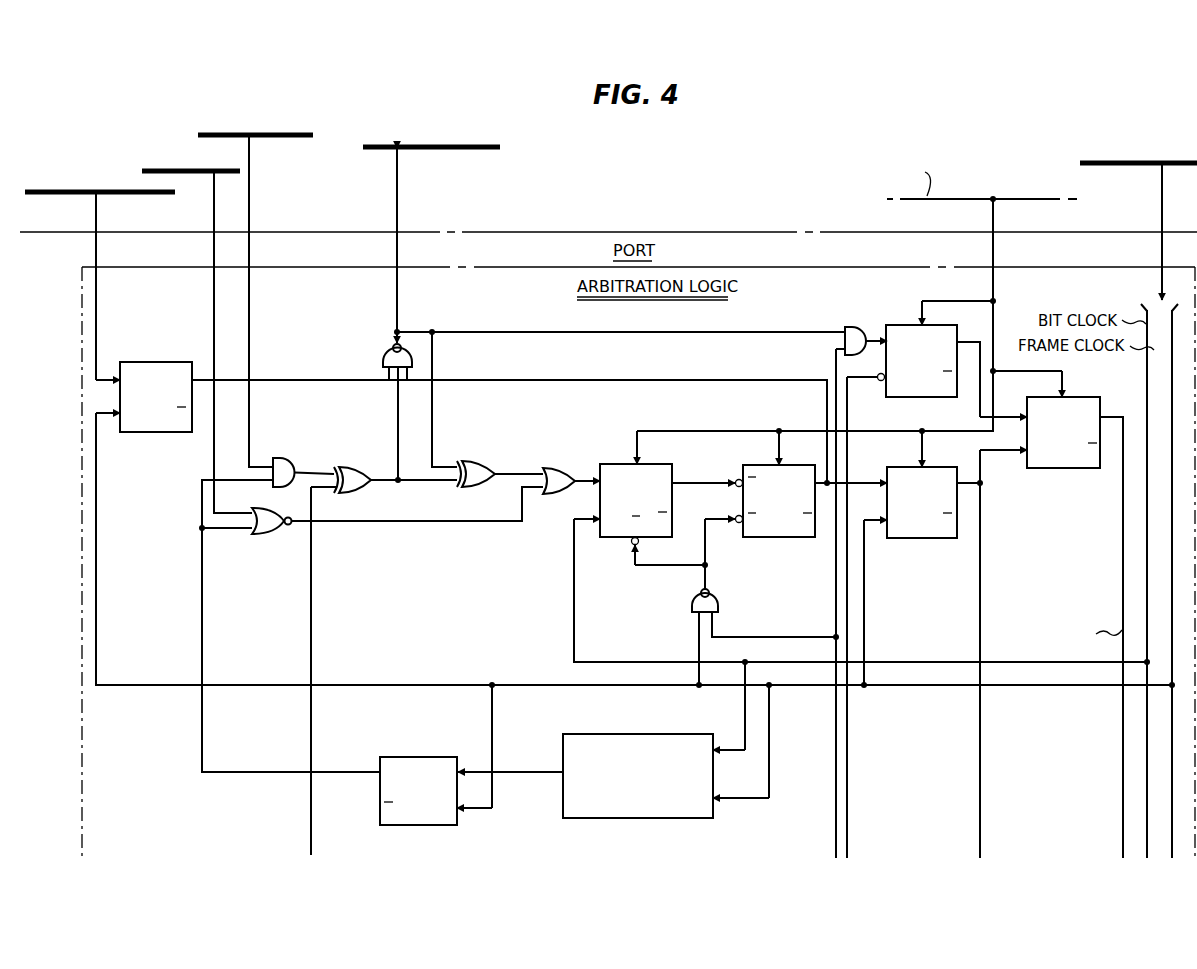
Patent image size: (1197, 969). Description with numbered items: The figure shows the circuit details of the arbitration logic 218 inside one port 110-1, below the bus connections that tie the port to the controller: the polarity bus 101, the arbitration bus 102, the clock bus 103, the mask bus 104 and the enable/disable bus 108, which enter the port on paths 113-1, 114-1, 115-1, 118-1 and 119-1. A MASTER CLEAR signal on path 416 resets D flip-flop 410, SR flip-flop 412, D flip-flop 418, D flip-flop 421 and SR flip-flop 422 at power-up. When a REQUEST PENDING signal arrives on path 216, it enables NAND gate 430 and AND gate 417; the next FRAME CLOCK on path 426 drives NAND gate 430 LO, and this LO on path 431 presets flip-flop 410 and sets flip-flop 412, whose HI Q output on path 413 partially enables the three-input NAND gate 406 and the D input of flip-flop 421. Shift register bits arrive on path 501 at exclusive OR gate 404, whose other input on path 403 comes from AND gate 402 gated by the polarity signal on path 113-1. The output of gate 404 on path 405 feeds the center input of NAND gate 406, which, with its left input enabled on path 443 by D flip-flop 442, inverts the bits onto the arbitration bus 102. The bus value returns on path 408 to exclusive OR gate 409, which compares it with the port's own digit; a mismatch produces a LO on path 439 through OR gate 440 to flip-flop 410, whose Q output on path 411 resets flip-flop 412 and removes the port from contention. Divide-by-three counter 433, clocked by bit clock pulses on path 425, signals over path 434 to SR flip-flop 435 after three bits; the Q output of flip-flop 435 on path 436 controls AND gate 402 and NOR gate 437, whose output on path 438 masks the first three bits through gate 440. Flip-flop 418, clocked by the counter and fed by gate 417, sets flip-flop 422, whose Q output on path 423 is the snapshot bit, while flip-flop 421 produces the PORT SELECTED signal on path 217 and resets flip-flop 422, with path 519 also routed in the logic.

The polarity conductor 101 is at (242, 132).
The arbitration bus 102 is at (432, 128).
The clock bus 103 is at (1108, 160).
The mask bus 104 is at (175, 168).
The enable/disable bus 108 is at (102, 190).
The port 110-1 is at (602, 230).
The path 113-1 is at (251, 212).
The path 114-1 is at (398, 204).
The clock bus line 115-1 is at (1160, 217).
The path 118-1 is at (212, 217).
The path 119-1 is at (94, 217).
The REQUEST PENDING signal path 216 is at (836, 371).
The PORT SELECTED signal path 217 is at (966, 478).
The arbitration logic 218 is at (767, 268).
The AND gate 402 is at (287, 458).
The path 403 is at (306, 472).
The exclusive OR gate 404 is at (358, 469).
The path 405 is at (395, 405).
The 3-input NAND gate 406 is at (389, 352).
The path 408 is at (436, 422).
The exclusive OR gate 409 is at (472, 462).
The D flip-flop 410 is at (610, 464).
The path 411 is at (700, 481).
The SR flip-flop 412 is at (761, 466).
The path 413 is at (466, 378).
The MASTER CLEAR path 416 is at (994, 254).
The AND gate 417 is at (848, 330).
The D flip-flop 418 is at (891, 324).
The D flip-flop 421 is at (895, 468).
The SR flip-flop 422 is at (1086, 398).
The path 423 is at (1122, 507).
The path 425 is at (574, 590).
The FRAME CLOCK path 426 is at (99, 449).
The NAND gate 430 is at (721, 604).
The path 431 is at (712, 578).
The divide-by-3 counter 433 is at (588, 734).
The path 434 is at (524, 772).
The SR flip-flop 435 is at (404, 757).
The path 436 is at (200, 516).
The NOR gate 437 is at (270, 536).
The path 438 is at (394, 526).
The path 439 is at (514, 472).
The OR gate 440 is at (554, 466).
The D flip-flop 442 is at (150, 362).
The path 443 is at (264, 378).
The path 501 is at (312, 510).
The path 519 is at (848, 411).